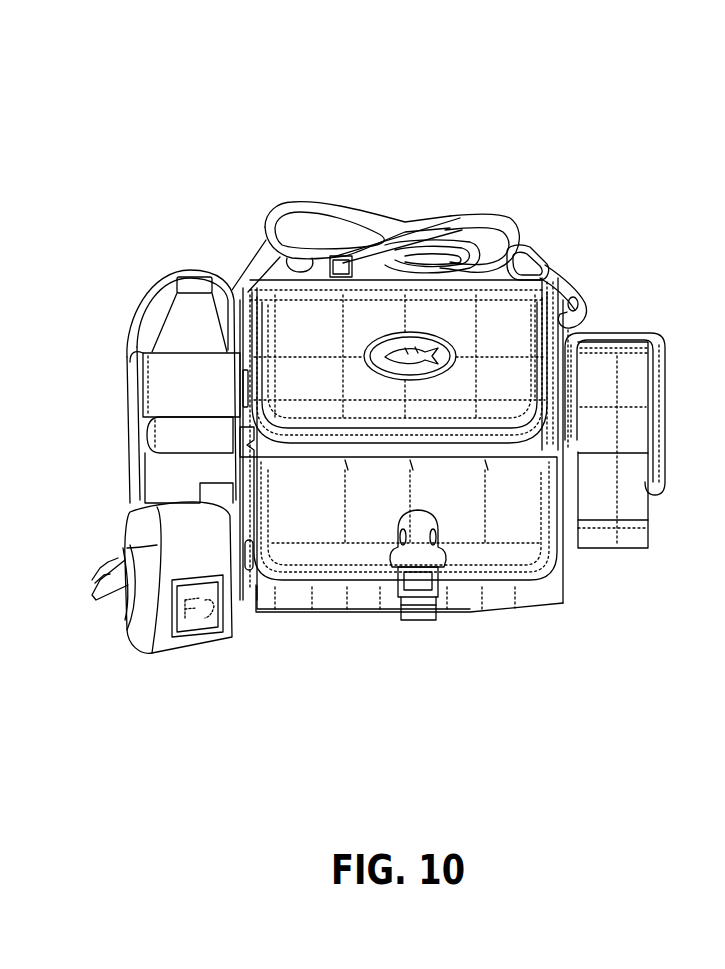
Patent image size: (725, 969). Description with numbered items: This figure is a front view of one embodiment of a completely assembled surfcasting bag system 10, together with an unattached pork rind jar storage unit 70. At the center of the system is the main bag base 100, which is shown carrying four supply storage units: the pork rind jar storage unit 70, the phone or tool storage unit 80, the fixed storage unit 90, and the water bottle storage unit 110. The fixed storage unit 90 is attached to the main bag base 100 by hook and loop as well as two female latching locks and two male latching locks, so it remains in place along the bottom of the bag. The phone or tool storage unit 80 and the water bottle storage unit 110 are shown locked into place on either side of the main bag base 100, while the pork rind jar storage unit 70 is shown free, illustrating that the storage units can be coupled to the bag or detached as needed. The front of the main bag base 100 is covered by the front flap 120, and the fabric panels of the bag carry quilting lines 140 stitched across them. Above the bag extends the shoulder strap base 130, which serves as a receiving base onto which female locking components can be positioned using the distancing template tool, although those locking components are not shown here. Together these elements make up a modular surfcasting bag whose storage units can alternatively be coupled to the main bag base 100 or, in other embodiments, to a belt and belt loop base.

The surfcasting bag system 10 is at (247, 81).
The pork rind jar storage unit 70 is at (170, 655).
The phone or tool storage unit 80 is at (648, 548).
The fixed storage unit 90 is at (330, 616).
The main bag base 100 is at (520, 452).
The water bottle storage unit 110 is at (127, 362).
The front flap 120 is at (465, 345).
The shoulder strap base 130 is at (260, 232).
The quilting lines 140 is at (343, 317).